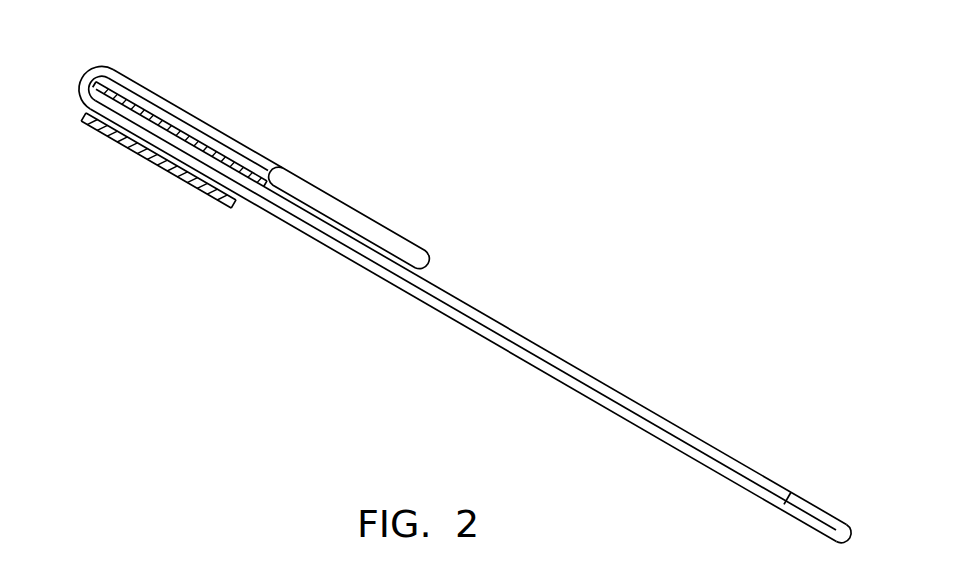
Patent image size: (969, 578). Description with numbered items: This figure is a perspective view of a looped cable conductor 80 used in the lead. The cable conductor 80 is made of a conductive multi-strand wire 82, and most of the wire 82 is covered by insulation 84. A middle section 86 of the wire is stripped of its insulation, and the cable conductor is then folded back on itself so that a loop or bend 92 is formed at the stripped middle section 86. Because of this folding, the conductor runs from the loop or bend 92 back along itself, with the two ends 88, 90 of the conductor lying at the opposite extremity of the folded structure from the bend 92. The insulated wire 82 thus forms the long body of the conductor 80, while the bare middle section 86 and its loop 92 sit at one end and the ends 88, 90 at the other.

The cable conductor 80 is at (566, 284).
The conductive multi-strand wire 82 is at (805, 521).
The insulation 84 is at (691, 433).
The middle section 86 is at (829, 514).
The end 88 is at (76, 94).
The end 90 is at (95, 62).
The loop or bend 92 is at (853, 540).